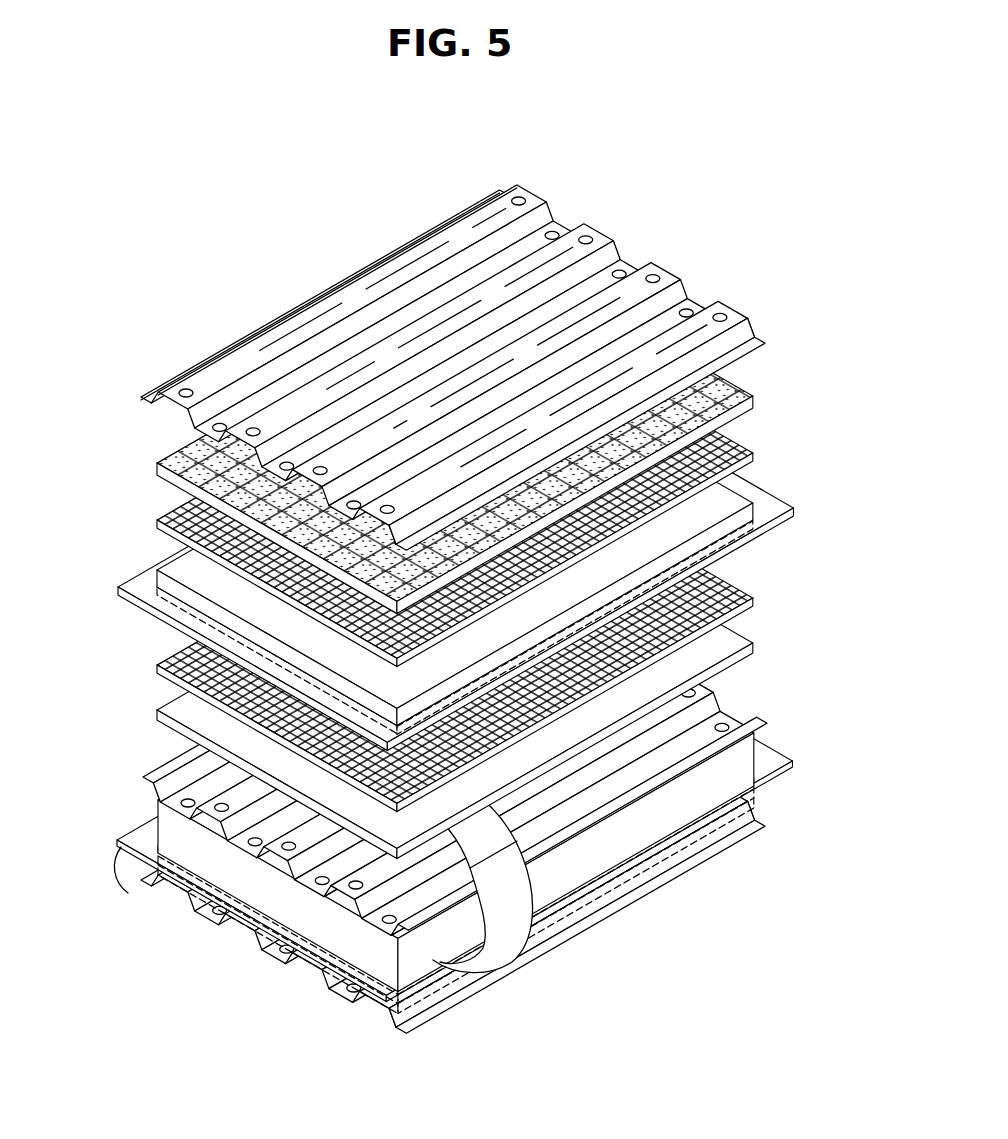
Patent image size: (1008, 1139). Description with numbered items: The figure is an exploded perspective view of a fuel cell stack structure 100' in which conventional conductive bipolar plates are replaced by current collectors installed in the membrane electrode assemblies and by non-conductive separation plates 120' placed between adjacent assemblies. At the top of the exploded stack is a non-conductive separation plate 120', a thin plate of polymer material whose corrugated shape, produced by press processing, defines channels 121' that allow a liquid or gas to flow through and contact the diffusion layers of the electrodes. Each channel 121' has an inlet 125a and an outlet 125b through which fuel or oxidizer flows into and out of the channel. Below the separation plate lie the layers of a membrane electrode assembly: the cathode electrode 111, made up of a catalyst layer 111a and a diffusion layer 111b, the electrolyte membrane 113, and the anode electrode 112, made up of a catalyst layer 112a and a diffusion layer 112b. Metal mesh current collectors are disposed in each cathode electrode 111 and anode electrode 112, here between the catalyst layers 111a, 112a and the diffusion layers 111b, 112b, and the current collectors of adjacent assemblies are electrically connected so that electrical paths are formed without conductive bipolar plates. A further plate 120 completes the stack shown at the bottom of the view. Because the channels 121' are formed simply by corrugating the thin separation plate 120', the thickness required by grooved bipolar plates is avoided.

The fuel cell stack structure 100' is at (449, 576).
The non-conductive separation plate 120' is at (434, 335).
The end plate 120 is at (480, 801).
The channel 121' is at (434, 335).
The inlet 125a is at (148, 366).
The outlet 125b is at (532, 163).
The cathode electrode 111 is at (420, 492).
The catalyst layer 111a is at (173, 573).
The diffusion layer 111b is at (158, 470).
The electrolyte membrane 113 is at (147, 605).
The anode electrode 112 is at (476, 606).
The catalyst layer 112a is at (723, 556).
The diffusion layer 112b is at (728, 641).